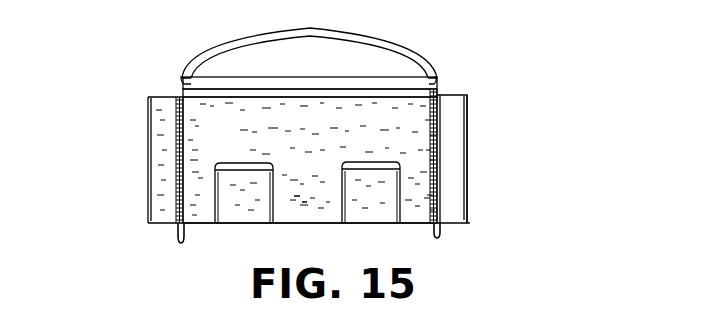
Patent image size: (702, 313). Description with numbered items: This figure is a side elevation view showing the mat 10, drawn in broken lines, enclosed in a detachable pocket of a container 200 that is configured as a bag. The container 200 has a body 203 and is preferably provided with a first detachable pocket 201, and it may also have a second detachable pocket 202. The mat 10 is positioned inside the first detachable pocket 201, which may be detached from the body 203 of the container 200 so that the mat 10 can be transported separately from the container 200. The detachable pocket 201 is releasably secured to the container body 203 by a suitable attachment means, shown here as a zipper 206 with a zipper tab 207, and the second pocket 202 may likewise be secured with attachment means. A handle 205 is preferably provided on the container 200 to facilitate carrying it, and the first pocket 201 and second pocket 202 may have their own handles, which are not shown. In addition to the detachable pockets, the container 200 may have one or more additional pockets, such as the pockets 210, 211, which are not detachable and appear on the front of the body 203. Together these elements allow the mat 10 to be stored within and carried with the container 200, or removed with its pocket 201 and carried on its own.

The container 200 is at (218, 36).
The handle 205 is at (382, 42).
The first detachable pocket 201 is at (470, 143).
The second detachable pocket 202 is at (148, 146).
The body 203 is at (310, 214).
The zipper 206 is at (183, 187).
The zipper tab 207 is at (177, 238).
The pocket 210 is at (240, 212).
The pocket 211 is at (380, 212).
The mat 10 is at (470, 120).